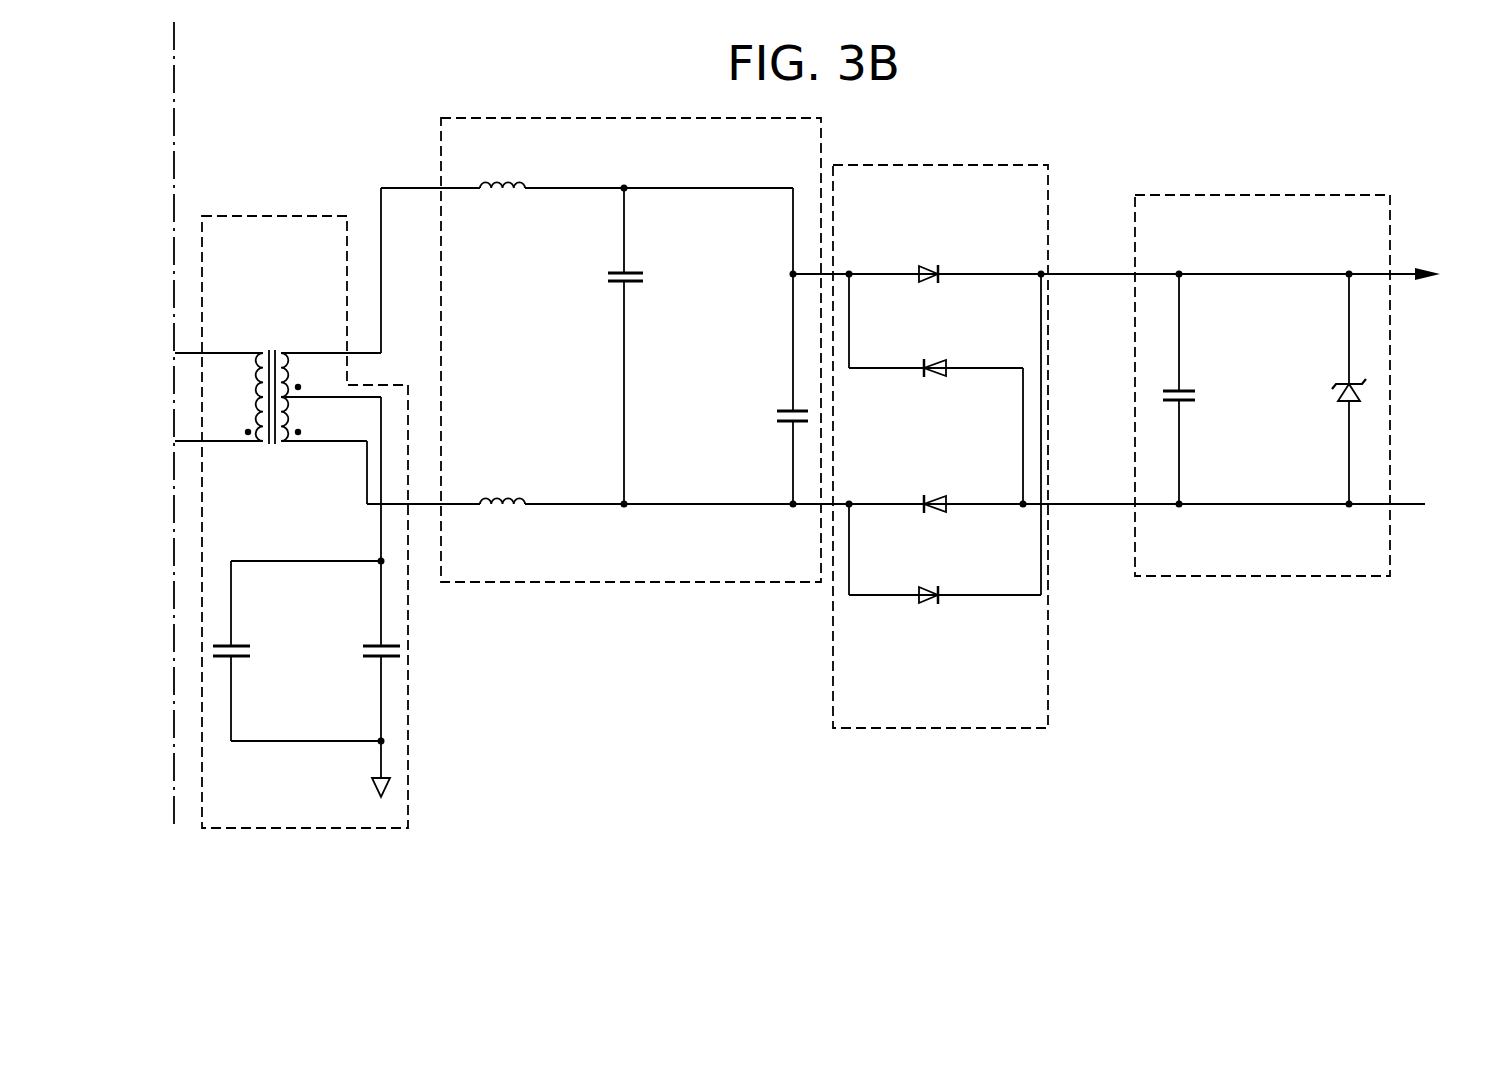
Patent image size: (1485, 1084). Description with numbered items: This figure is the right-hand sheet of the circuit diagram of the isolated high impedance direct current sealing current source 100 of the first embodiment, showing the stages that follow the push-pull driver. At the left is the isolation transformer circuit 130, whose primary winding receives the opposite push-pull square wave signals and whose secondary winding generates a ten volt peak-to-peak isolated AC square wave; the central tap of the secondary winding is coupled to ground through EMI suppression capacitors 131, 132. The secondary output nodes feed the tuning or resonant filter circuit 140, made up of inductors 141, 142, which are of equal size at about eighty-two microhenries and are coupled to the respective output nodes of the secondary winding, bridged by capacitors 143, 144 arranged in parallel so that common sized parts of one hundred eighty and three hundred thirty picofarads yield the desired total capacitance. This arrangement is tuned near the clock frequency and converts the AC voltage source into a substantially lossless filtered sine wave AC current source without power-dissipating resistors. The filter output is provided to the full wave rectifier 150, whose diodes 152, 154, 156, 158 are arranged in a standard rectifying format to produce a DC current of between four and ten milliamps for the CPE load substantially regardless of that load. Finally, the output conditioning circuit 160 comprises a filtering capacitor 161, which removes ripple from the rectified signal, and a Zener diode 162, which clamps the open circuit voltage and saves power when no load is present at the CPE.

The direct current sealing current source 100 is at (665, 731).
The isolation transformer circuit 130 is at (282, 830).
The EMI suppression capacitor 131 is at (220, 641).
The EMI suppression capacitor 132 is at (387, 660).
The tuning or resonant filter circuit 140 is at (623, 583).
The inductor 141 is at (530, 182).
The inductor 142 is at (527, 497).
The capacitor 143 is at (618, 285).
The capacitor 144 is at (800, 424).
The full wave rectifier 150 is at (965, 730).
The diode 152 is at (918, 273).
The diode 154 is at (947, 371).
The diode 156 is at (947, 507).
The diode 158 is at (917, 598).
The output conditioning circuit 160 is at (1324, 578).
The filtering capacitor 161 is at (1191, 401).
The Zener diode 162 is at (1362, 403).